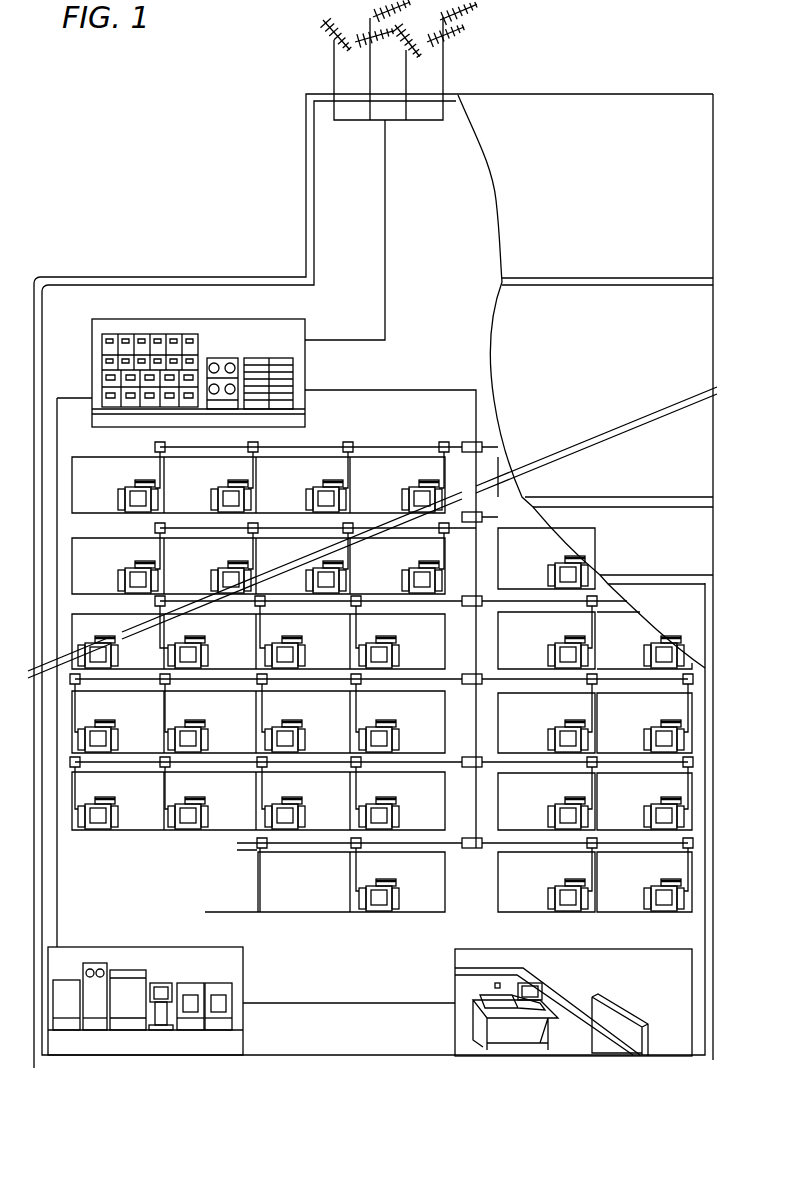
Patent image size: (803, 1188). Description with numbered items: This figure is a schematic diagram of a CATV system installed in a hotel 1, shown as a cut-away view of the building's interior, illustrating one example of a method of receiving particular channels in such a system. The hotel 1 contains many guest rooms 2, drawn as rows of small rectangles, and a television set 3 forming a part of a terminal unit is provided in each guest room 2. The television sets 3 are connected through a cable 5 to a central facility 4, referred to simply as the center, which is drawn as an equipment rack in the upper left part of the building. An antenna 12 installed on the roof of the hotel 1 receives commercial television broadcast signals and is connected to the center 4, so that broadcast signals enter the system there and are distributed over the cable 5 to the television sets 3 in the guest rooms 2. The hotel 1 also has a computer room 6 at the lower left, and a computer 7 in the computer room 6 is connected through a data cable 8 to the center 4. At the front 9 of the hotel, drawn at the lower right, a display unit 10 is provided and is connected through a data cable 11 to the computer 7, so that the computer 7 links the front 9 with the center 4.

The hotel 1 is at (692, 337).
The guest room 2 is at (106, 470).
The television set 3 is at (120, 497).
The central facility 4 is at (263, 332).
The cable 5 is at (423, 390).
The computer room 6 is at (145, 995).
The computer 7 is at (128, 1010).
The data cable 8 is at (57, 697).
The front 9 is at (573, 1020).
The display unit 10 is at (515, 1035).
The data cable 11 is at (353, 1002).
The antenna 12 is at (463, 58).